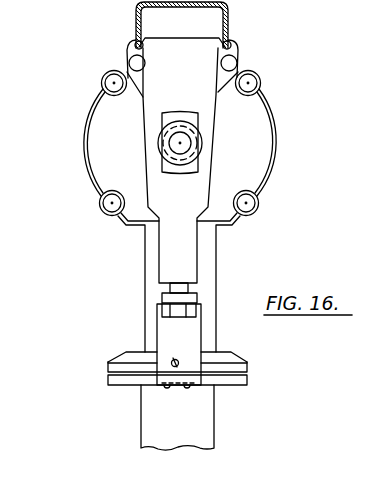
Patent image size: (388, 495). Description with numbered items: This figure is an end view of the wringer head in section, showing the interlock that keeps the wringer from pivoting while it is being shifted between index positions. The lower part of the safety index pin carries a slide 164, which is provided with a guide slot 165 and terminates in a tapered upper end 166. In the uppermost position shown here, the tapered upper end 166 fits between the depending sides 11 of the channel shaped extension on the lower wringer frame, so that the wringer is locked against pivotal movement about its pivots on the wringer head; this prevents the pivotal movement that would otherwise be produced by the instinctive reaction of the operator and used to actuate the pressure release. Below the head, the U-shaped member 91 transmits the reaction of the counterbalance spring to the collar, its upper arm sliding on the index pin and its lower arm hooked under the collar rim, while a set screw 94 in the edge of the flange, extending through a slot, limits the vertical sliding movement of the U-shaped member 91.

The depending sides 11 is at (135, 21).
The tapered upper end 166 is at (143, 44).
The guide slot 165 is at (199, 126).
The slide 164 is at (221, 170).
The U-shaped member 91 is at (192, 339).
The set screw 94 is at (175, 359).